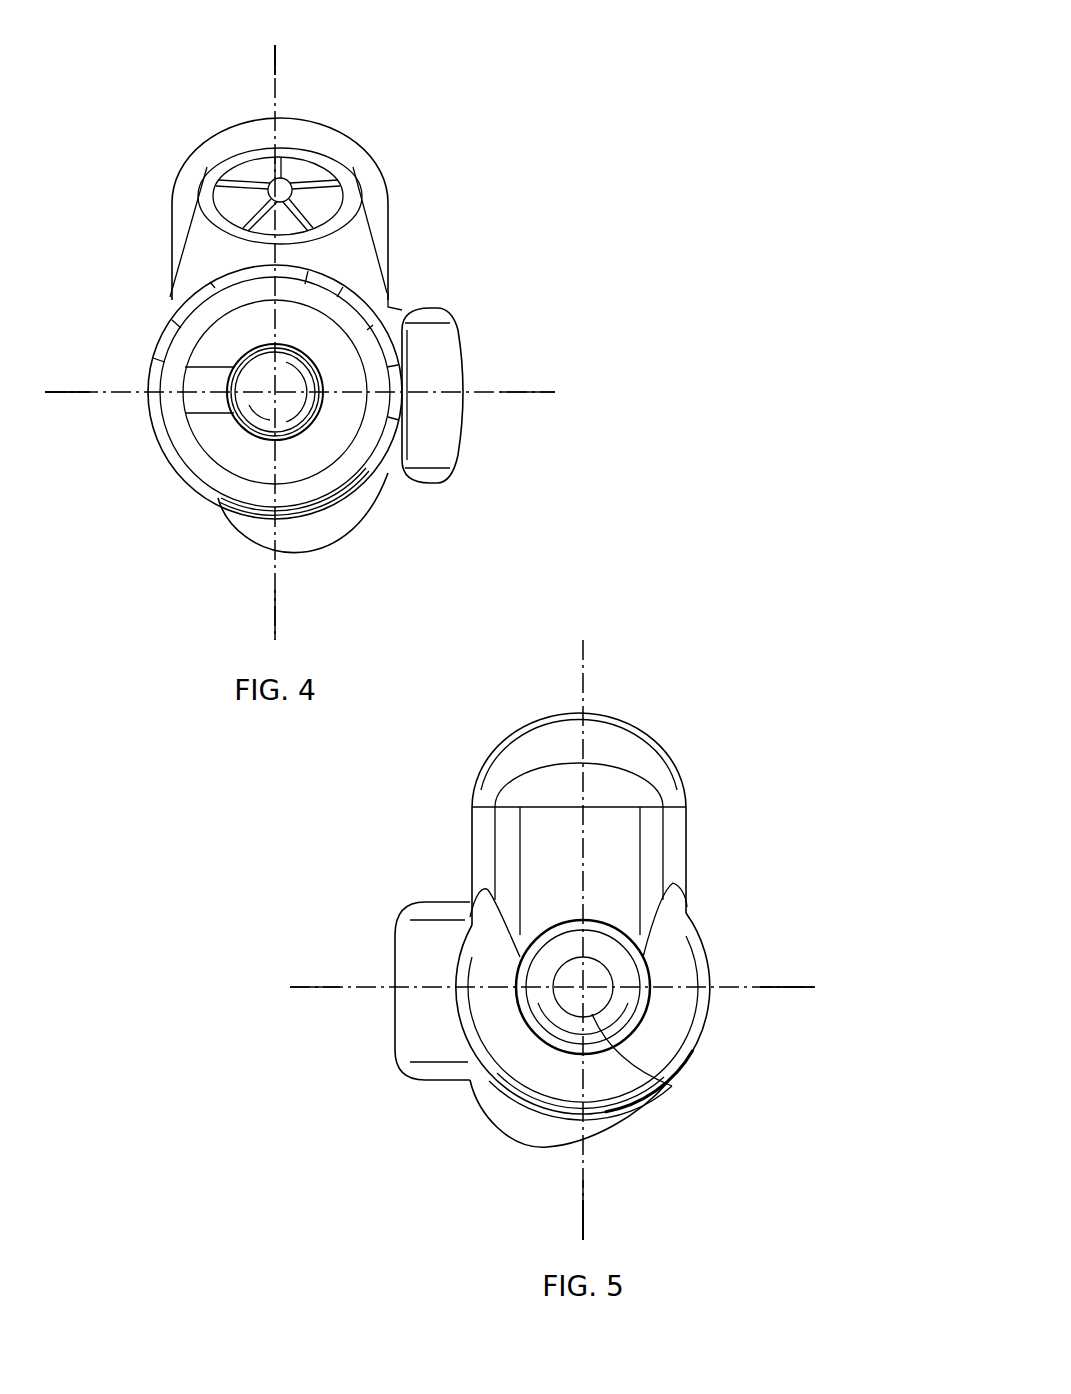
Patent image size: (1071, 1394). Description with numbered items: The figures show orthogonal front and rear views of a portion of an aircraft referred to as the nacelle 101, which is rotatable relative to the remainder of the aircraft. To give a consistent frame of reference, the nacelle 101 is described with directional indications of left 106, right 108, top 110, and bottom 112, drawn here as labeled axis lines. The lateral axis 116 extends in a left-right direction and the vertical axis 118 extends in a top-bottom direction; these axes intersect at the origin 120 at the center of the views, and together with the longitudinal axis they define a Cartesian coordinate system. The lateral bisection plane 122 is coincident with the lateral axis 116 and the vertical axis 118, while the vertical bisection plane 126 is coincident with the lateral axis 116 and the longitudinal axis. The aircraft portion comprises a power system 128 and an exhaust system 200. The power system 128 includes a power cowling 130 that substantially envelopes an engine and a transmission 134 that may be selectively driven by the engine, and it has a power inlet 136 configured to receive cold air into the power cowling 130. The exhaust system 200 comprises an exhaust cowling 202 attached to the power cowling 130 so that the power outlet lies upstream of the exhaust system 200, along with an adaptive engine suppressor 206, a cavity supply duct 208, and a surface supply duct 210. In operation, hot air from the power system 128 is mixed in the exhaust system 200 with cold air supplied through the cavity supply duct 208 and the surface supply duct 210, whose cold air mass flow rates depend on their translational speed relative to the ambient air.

In FIG. 4, the nacelle 101 is at (128, 55).
In FIG. 5, the nacelle 101 is at (727, 647).
In FIG. 4, the left 106 is at (98, 402).
In FIG. 5, the left 106 is at (775, 975).
In FIG. 4, the right 108 is at (530, 380).
In FIG. 5, the right 108 is at (348, 998).
In FIG. 4, the top 110 is at (290, 102).
In FIG. 5, the top 110 is at (597, 697).
In FIG. 4, the bottom 112 is at (263, 598).
In FIG. 5, the bottom 112 is at (571, 1188).
In FIG. 4, the lateral axis 116 is at (82, 390).
In FIG. 5, the lateral axis 116 is at (768, 992).
In FIG. 4, the vertical axis 118 is at (272, 62).
In FIG. 5, the vertical axis 118 is at (586, 1228).
In FIG. 4, the origin 120 is at (304, 368).
In FIG. 5, the origin 120 is at (590, 973).
In FIG. 4, the lateral bisection plane 122 is at (241, 56).
In FIG. 5, the lateral bisection plane 122 is at (638, 1224).
In FIG. 4, the vertical bisection plane 126 is at (73, 367).
In FIG. 5, the vertical bisection plane 126 is at (801, 1014).
In FIG. 4, the power system 128 is at (213, 547).
In FIG. 5, the power system 128 is at (514, 1172).
In FIG. 4, the power cowling 130 is at (192, 497).
In FIG. 5, the power cowling 130 is at (496, 1124).
In FIG. 4, the transmission 134 is at (240, 349).
In FIG. 4, the power inlet 136 is at (345, 505).
In FIG. 4, the exhaust system 200 is at (410, 214).
In FIG. 5, the exhaust system 200 is at (712, 795).
In FIG. 4, the exhaust cowling 202 is at (362, 160).
In FIG. 5, the exhaust cowling 202 is at (664, 755).
In FIG. 5, the adaptive engine suppressor 206 is at (668, 1082).
In FIG. 4, the cavity supply duct 208 is at (232, 172).
In FIG. 4, the surface supply duct 210 is at (443, 318).
In FIG. 5, the surface supply duct 210 is at (412, 1082).